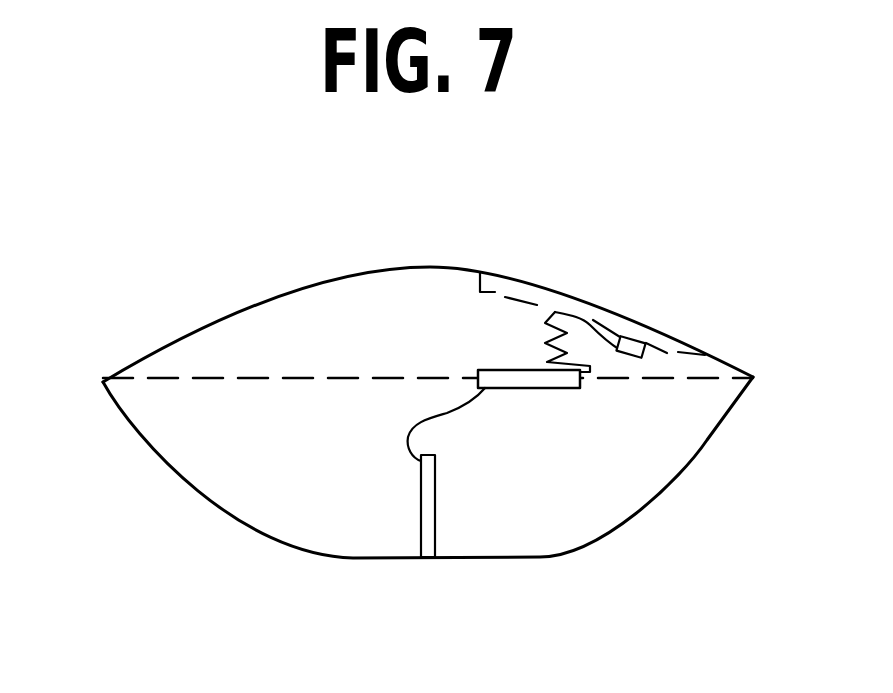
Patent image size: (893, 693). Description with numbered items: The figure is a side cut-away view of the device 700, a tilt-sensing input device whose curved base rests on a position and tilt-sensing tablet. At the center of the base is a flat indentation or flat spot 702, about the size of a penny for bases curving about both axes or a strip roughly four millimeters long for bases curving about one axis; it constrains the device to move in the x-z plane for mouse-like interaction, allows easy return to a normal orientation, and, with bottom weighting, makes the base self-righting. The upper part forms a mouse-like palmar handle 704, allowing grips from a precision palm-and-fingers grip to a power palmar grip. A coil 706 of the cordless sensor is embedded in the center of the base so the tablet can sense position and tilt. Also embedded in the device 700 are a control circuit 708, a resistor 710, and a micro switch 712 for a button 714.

The device 700 is at (228, 585).
The flat spot 702 is at (527, 560).
The mouse-like palmar handle 704 is at (266, 298).
The coil 706 is at (433, 561).
The control circuit 708 is at (498, 370).
The resistor 710 is at (548, 331).
The micro switch 712 is at (640, 362).
The button 714 is at (600, 303).